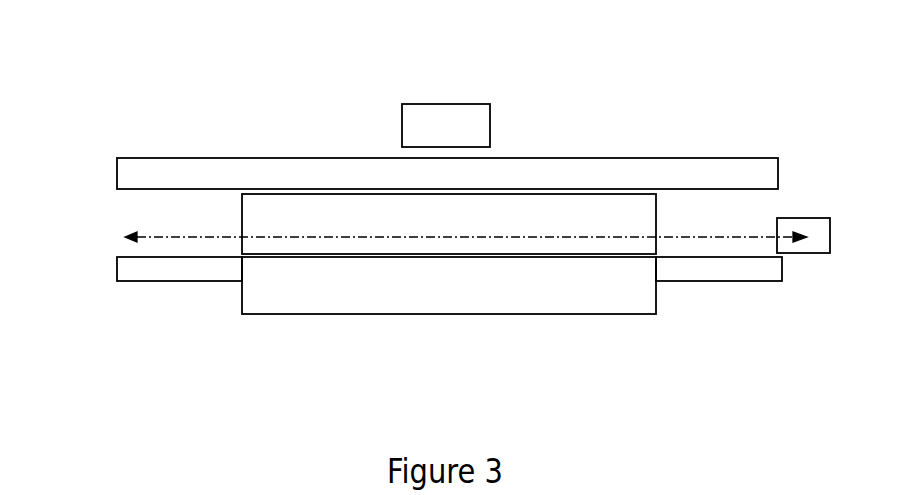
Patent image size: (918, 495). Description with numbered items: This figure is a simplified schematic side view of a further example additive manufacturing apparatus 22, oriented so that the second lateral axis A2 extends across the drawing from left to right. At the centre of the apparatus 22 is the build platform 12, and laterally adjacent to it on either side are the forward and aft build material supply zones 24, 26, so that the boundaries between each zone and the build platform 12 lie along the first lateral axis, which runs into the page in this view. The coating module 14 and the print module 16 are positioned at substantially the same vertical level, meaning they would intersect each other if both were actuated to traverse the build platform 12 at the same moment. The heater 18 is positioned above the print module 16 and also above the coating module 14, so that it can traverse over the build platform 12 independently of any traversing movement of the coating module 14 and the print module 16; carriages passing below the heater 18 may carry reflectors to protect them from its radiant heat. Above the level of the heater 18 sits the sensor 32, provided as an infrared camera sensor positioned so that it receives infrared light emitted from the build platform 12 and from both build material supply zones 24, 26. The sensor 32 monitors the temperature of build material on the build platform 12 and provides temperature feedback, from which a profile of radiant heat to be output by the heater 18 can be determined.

The additive manufacturing apparatus 22 is at (189, 48).
The second lateral axis A2 is at (172, 230).
The build platform 12 is at (456, 293).
The coating module 14 is at (800, 222).
The print module 16 is at (582, 205).
The heater 18 is at (723, 165).
The forward build material supply zone 24 is at (763, 267).
The aft build material supply zone 26 is at (142, 267).
The sensor 32 is at (433, 117).